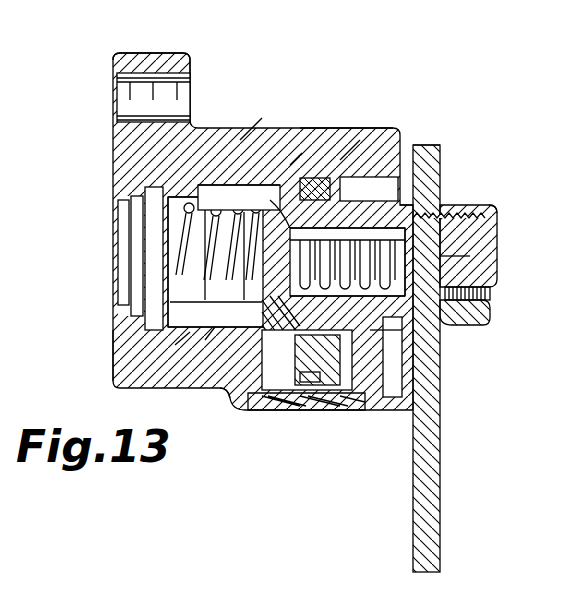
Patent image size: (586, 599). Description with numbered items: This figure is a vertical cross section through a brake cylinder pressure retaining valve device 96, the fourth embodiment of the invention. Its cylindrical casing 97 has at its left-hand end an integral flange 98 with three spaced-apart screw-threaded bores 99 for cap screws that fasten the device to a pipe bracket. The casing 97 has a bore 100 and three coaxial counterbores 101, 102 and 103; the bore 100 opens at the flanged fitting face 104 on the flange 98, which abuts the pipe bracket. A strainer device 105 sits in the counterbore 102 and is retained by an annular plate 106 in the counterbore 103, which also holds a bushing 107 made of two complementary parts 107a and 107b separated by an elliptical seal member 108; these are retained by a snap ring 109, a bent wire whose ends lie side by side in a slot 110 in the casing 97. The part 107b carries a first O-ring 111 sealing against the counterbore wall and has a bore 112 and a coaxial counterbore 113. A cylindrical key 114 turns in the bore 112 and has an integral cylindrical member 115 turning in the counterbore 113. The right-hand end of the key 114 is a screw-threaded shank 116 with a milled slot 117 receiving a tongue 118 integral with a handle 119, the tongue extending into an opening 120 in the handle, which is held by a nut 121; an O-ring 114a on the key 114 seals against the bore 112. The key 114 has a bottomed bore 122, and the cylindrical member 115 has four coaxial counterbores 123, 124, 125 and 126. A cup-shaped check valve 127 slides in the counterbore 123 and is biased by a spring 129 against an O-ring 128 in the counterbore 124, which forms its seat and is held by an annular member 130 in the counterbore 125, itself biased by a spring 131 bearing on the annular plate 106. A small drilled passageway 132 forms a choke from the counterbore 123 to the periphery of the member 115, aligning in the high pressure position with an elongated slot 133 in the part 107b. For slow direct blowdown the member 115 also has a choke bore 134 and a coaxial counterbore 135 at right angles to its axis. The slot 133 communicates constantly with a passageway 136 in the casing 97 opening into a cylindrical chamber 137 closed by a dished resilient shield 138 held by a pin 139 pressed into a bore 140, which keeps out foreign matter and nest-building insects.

The brake cylinder pressure retaining valve device 96 is at (293, 126).
The cylindrical casing 97 is at (329, 140).
The flange 98 is at (158, 34).
The screw-threaded bores 99 is at (186, 84).
The bore 100 is at (125, 212).
The counterbore 101 is at (135, 199).
The counterbore 102 is at (150, 192).
The counterbore 103 is at (180, 192).
The flanged fitting face 104 is at (113, 358).
The strainer device 105 is at (148, 268).
The annular plate 106 is at (172, 336).
The bushing 107 is at (252, 162).
The bushing part 107a is at (180, 346).
The bushing part 107b is at (328, 184).
The elliptical seal member 108 is at (205, 342).
The snap ring 109 is at (397, 163).
The slot 110 is at (383, 396).
The first O-ring 111 is at (357, 172).
The bore 112 is at (400, 205).
The counterbore 113 is at (344, 185).
The key 114 is at (402, 287).
The O-ring 114a is at (385, 333).
The cylindrical member 115 is at (218, 182).
The screw-threaded shank 116 is at (490, 236).
The slot 117 is at (490, 290).
The tongue 118 is at (443, 327).
The handle 119 is at (432, 401).
The opening 120 is at (440, 215).
The nut 121 is at (490, 211).
The bottomed bore 122 is at (402, 241).
The counterbore 123 is at (392, 306).
The counterbore 124 is at (295, 220).
The counterbore 125 is at (298, 176).
The counterbore 126 is at (189, 202).
The check valve 127 is at (303, 292).
The O-ring 128 is at (300, 313).
The spring 129 is at (408, 256).
The annular member 130 is at (295, 200).
The spring 131 is at (172, 186).
The passageway 132 is at (327, 353).
The elongated slot 133 is at (322, 377).
The bore 134 is at (254, 194).
The counterbore 135 is at (243, 240).
The passageway 136 is at (241, 401).
The cylindrical chamber 137 is at (276, 412).
The shield 138 is at (260, 412).
The pin 139 is at (300, 410).
The bore 140 is at (318, 411).